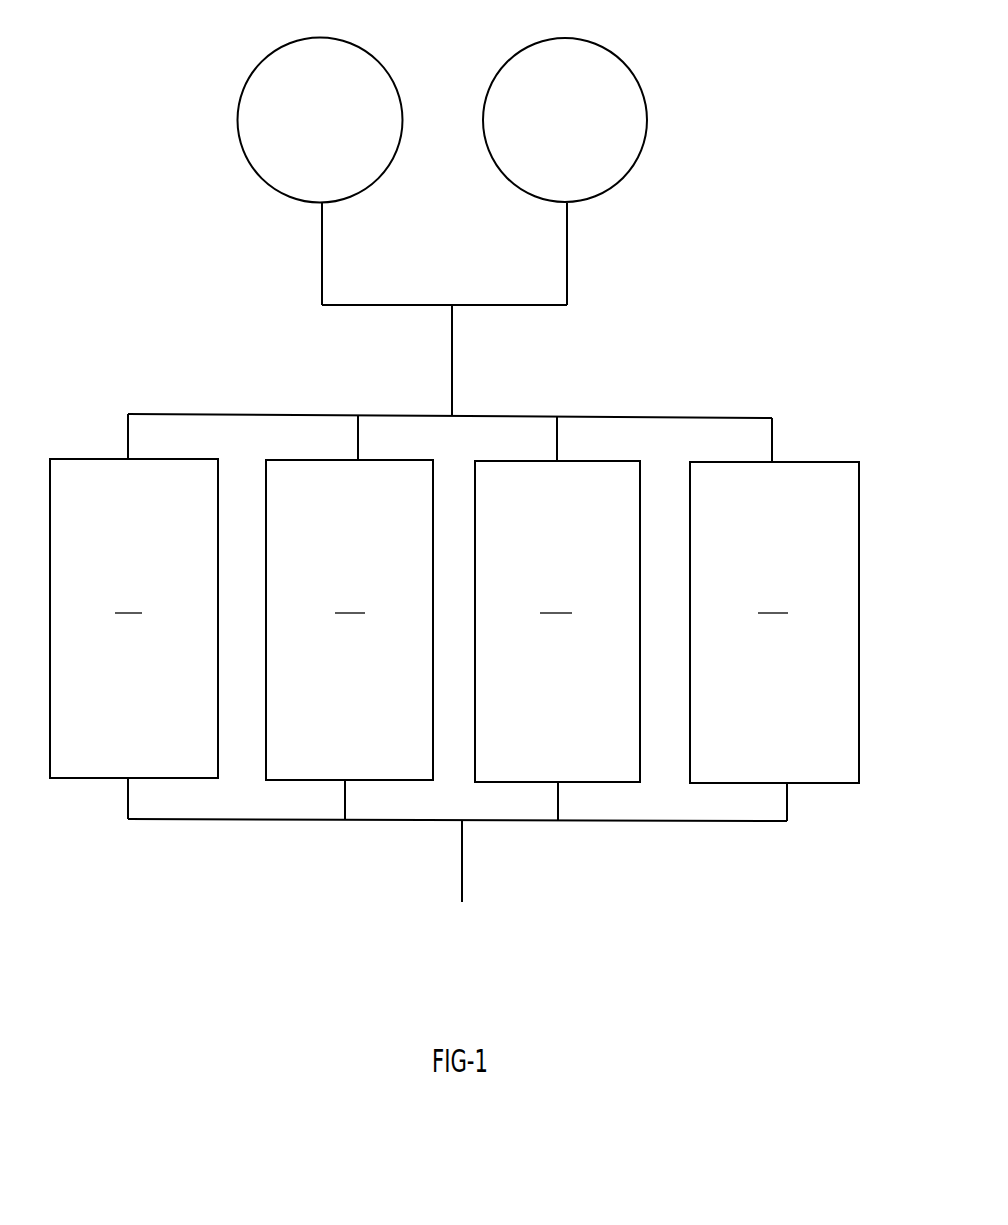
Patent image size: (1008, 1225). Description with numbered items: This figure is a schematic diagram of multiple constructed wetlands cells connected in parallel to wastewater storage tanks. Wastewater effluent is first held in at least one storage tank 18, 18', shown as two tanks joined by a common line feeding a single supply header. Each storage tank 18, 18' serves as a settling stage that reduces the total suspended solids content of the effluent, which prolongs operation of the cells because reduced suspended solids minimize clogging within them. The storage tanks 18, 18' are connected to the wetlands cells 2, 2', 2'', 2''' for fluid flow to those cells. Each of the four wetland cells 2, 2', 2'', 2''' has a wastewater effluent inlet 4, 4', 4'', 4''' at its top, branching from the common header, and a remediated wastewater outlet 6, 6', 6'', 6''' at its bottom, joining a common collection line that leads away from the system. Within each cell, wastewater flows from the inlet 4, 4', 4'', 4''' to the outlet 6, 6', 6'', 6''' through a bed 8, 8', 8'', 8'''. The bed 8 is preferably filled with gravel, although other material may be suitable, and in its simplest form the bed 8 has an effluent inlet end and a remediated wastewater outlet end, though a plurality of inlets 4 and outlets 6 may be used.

The wetland cell 2 is at (156, 618).
The wetland cell 2' is at (372, 620).
The wetland cell 2'' is at (582, 621).
The wetland cell 2''' is at (813, 622).
The wastewater effluent inlet 4 is at (153, 436).
The wastewater effluent inlet 4' is at (386, 437).
The wastewater effluent inlet 4'' is at (585, 439).
The wastewater effluent inlet 4''' is at (806, 440).
The remediated wastewater outlet 6 is at (104, 798).
The remediated wastewater outlet 6' is at (371, 800).
The remediated wastewater outlet 6'' is at (587, 801).
The remediated wastewater outlet 6''' is at (818, 802).
The bed 8 is at (128, 601).
The bed 8' is at (350, 601).
The bed 8'' is at (556, 601).
The bed 8''' is at (776, 601).
The storage tank 18 is at (334, 103).
The storage tank 18' is at (581, 107).